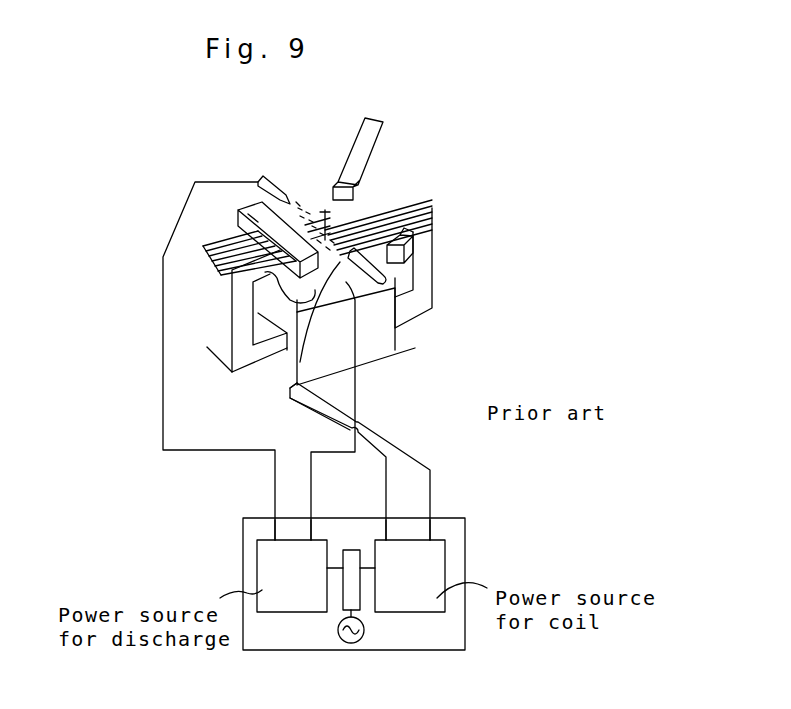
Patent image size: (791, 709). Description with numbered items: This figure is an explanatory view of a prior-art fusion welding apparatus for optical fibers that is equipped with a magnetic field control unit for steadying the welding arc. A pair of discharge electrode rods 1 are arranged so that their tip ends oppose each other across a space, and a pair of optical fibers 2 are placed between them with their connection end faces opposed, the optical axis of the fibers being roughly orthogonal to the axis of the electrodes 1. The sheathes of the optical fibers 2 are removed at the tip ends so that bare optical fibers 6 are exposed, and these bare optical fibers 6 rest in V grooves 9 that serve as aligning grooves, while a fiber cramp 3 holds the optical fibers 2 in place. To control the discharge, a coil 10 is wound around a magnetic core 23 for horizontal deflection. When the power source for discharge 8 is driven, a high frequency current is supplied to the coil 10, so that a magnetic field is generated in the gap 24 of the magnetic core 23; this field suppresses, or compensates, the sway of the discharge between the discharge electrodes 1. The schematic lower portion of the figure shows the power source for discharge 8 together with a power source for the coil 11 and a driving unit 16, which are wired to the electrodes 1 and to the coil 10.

The discharge electrode 1 is at (278, 185).
The optical fiber 2 is at (218, 242).
The fiber cramp 3 is at (250, 200).
The bare optical fiber 6 is at (315, 213).
The power source for discharge 8 is at (318, 540).
The V groove 9 is at (223, 268).
The coil 10 is at (390, 338).
The power source for coil 11 is at (440, 540).
The driving unit 16 is at (437, 598).
The magnetic core 23 is at (430, 240).
The gap 24 is at (297, 373).